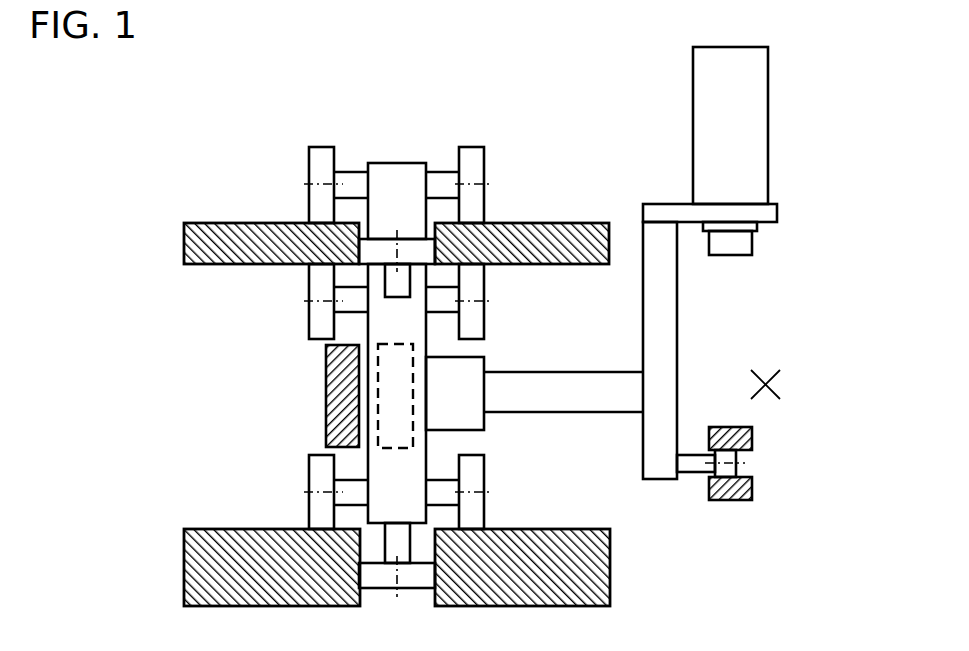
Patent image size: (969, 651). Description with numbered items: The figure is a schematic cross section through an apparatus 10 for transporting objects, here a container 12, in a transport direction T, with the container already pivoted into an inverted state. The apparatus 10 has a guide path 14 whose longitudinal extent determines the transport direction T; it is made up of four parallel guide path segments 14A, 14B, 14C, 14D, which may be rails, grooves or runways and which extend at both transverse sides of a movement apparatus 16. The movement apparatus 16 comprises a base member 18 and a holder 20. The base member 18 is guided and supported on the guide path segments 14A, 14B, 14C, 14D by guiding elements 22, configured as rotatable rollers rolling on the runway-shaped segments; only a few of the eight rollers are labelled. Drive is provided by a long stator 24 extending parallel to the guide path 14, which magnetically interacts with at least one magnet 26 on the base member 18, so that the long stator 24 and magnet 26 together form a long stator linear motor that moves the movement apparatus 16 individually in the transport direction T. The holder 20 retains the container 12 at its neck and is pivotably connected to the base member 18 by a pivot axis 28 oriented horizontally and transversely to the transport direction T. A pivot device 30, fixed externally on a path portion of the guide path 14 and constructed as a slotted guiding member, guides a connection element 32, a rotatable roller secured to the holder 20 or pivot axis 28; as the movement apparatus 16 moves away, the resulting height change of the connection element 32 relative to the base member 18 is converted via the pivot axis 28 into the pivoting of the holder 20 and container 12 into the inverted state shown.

The apparatus 10 is at (420, 65).
The container 12 is at (768, 155).
The guide path 14 is at (140, 177).
The guide path segment 14A is at (184, 232).
The guide path segment 14B is at (184, 543).
The guide path segment 14C is at (535, 223).
The guide path segment 14D is at (610, 557).
The movement apparatus 16 is at (516, 121).
The base member 18 is at (395, 167).
The holder 20 is at (758, 214).
The guiding elements 22 is at (311, 200).
The long stator 24 is at (326, 375).
The magnet 26 is at (413, 413).
The pivot axis 28 is at (527, 380).
The pivot device 30 is at (752, 488).
The connection element 32 is at (736, 463).
The transport direction T is at (766, 377).